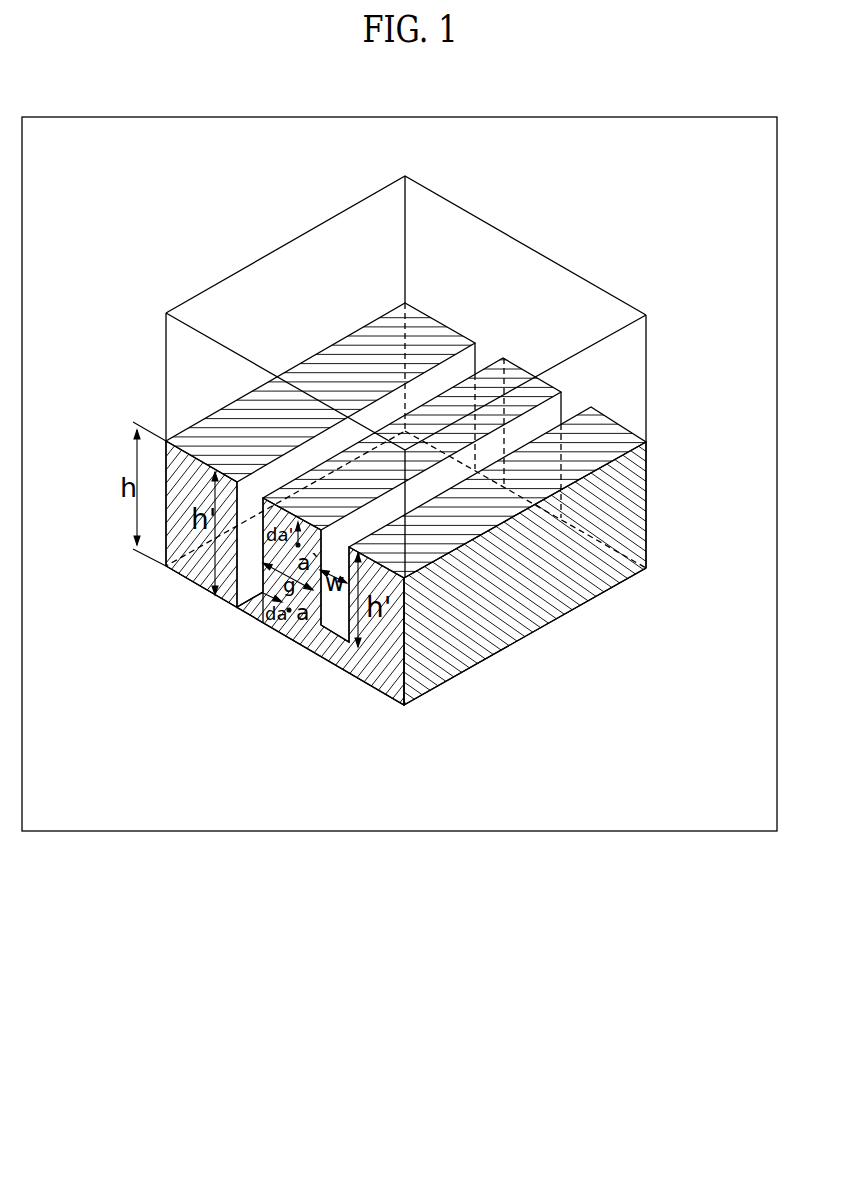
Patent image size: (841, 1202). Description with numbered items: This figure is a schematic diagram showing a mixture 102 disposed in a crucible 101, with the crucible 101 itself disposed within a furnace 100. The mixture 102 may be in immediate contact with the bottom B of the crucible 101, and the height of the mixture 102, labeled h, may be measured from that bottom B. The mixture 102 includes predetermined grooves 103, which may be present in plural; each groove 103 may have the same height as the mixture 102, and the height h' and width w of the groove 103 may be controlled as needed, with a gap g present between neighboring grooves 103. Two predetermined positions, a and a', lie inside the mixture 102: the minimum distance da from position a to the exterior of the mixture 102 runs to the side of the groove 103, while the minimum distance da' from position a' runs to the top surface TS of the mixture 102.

The furnace 100 is at (117, 831).
The crucible 101 is at (166, 340).
The mixture 102 is at (193, 573).
The groove 103 is at (406, 476).
The top surface TS is at (253, 440).
The bottom B is at (375, 700).